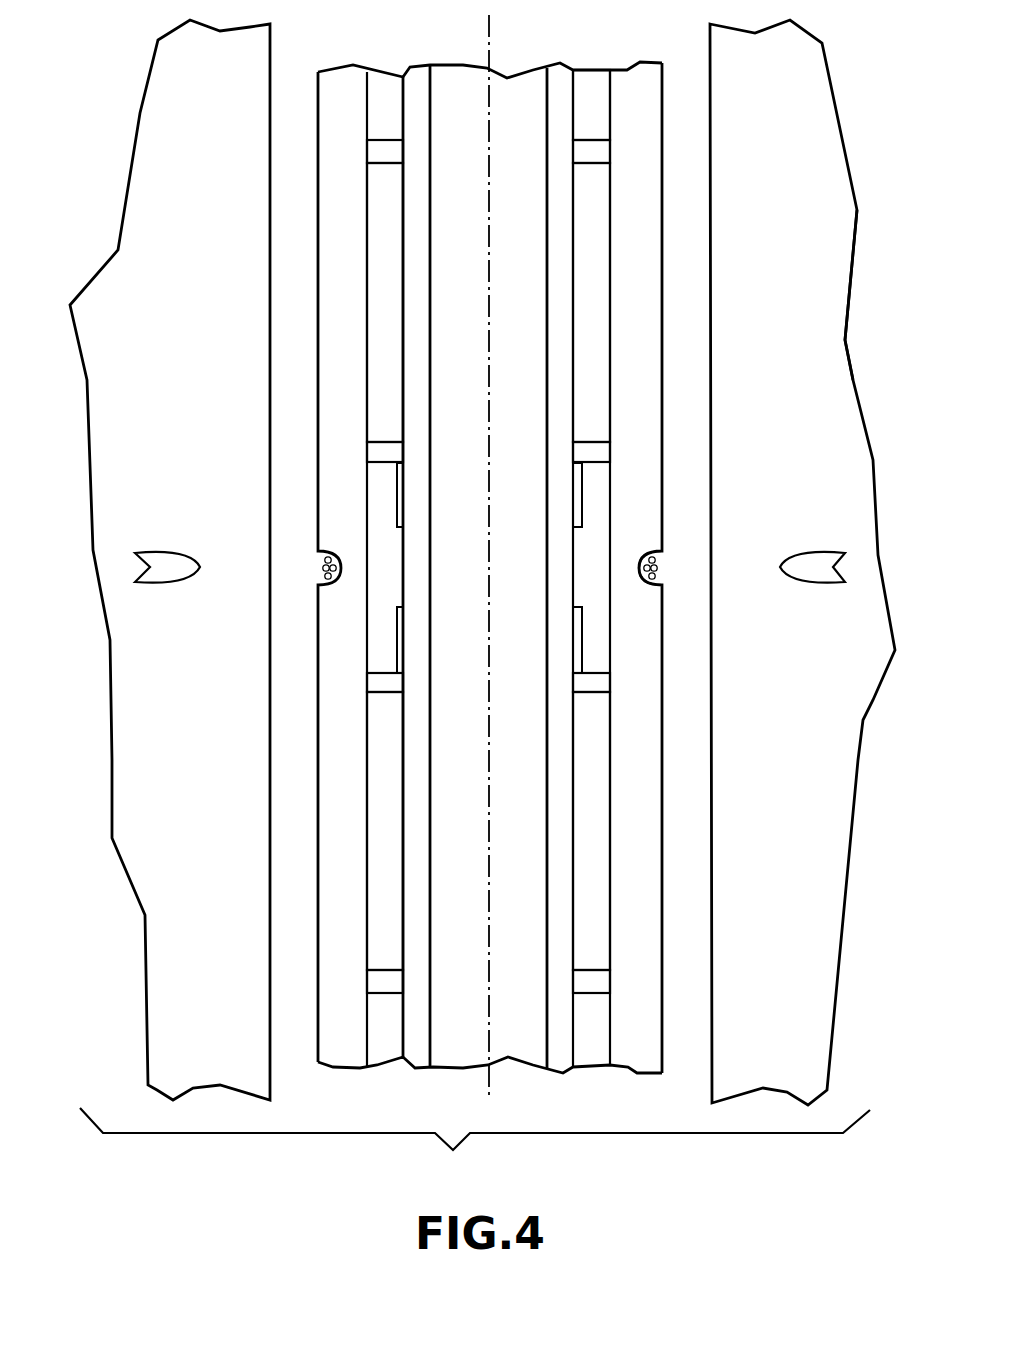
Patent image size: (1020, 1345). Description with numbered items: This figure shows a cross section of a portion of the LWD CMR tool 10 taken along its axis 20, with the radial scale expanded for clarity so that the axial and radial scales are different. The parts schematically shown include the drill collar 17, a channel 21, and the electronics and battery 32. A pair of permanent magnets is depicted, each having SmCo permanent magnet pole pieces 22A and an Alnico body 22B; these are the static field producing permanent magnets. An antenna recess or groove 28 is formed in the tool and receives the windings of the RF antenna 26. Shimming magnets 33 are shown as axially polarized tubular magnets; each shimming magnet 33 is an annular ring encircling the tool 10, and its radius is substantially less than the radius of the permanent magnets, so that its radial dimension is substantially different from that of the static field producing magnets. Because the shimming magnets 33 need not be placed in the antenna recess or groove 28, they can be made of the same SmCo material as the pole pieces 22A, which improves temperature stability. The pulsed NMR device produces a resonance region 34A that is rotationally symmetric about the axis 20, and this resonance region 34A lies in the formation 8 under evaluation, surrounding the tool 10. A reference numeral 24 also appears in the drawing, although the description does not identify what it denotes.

The formation 8 is at (764, 351).
The LWD CMR tool 10 is at (822, 380).
The drill collar 17 is at (620, 298).
The axis 20 is at (489, 40).
The channel 21 is at (506, 182).
The magnet carrier 24 is at (592, 70).
The windings of the RF antenna 26 is at (655, 578).
The antenna recess or groove 28 is at (676, 548).
The electronics and battery 32 is at (579, 127).
The shimming magnet 33 is at (397, 490).
The SmCo permanent magnet pole pieces 22A is at (610, 152).
The Alnico body 22B is at (610, 232).
The resonance region 34A is at (150, 553).